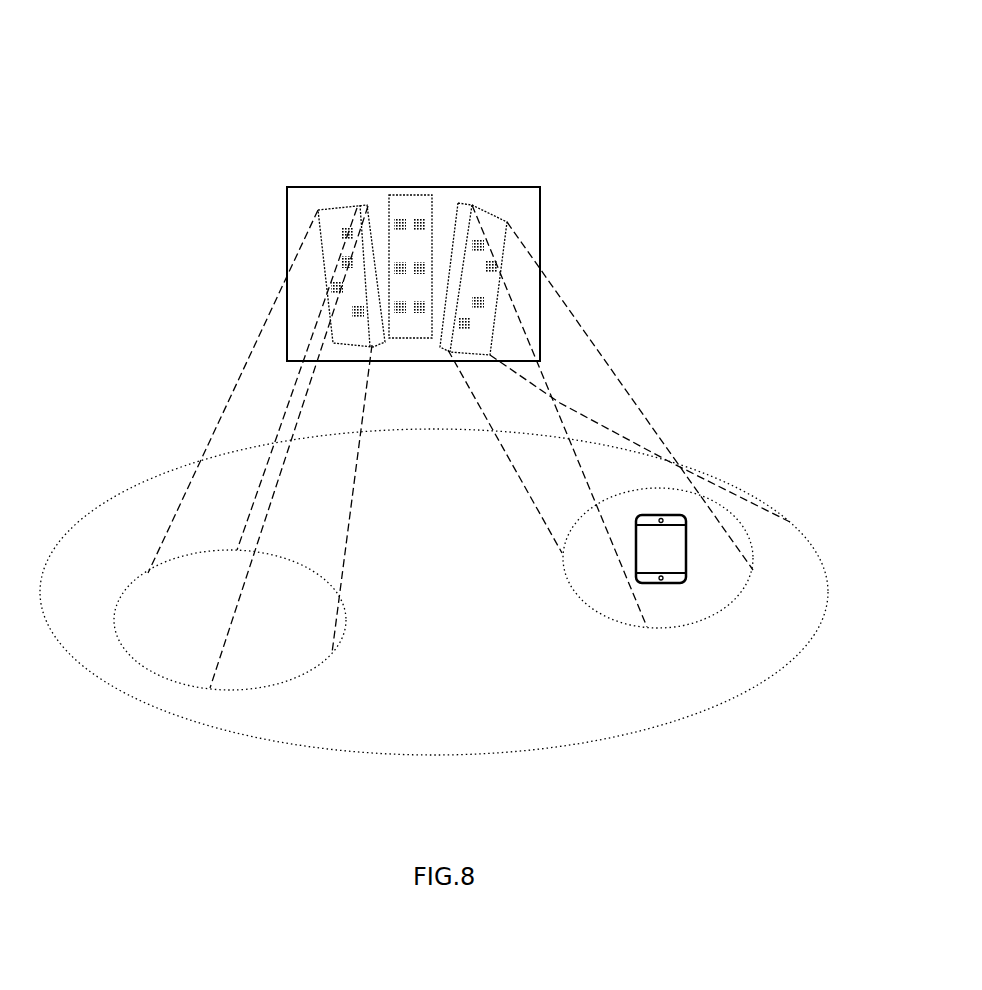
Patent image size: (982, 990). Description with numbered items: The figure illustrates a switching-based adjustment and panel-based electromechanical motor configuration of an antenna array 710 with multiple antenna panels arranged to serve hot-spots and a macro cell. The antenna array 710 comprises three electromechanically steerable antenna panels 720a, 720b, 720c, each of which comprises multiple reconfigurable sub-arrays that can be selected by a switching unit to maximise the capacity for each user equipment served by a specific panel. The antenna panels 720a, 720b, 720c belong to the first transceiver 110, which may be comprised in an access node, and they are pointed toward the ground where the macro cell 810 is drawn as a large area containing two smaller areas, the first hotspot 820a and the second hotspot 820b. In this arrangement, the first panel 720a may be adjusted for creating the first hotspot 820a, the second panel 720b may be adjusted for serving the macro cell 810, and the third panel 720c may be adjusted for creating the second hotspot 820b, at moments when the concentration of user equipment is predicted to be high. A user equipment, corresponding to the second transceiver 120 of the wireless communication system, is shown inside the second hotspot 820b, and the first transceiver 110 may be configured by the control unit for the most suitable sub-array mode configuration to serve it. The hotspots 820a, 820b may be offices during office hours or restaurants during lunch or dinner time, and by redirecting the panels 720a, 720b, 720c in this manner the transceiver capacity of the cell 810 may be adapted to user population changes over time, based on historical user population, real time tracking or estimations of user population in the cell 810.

The first transceiver 110 is at (678, 515).
The second transceiver 120 is at (722, 73).
The antenna array 710 is at (465, 187).
The first panel 720a is at (318, 210).
The second panel 720b is at (432, 196).
The third panel 720c is at (500, 238).
The macro cell 810 is at (257, 738).
The first hotspot 820a is at (332, 653).
The second hotspot 820b is at (783, 586).